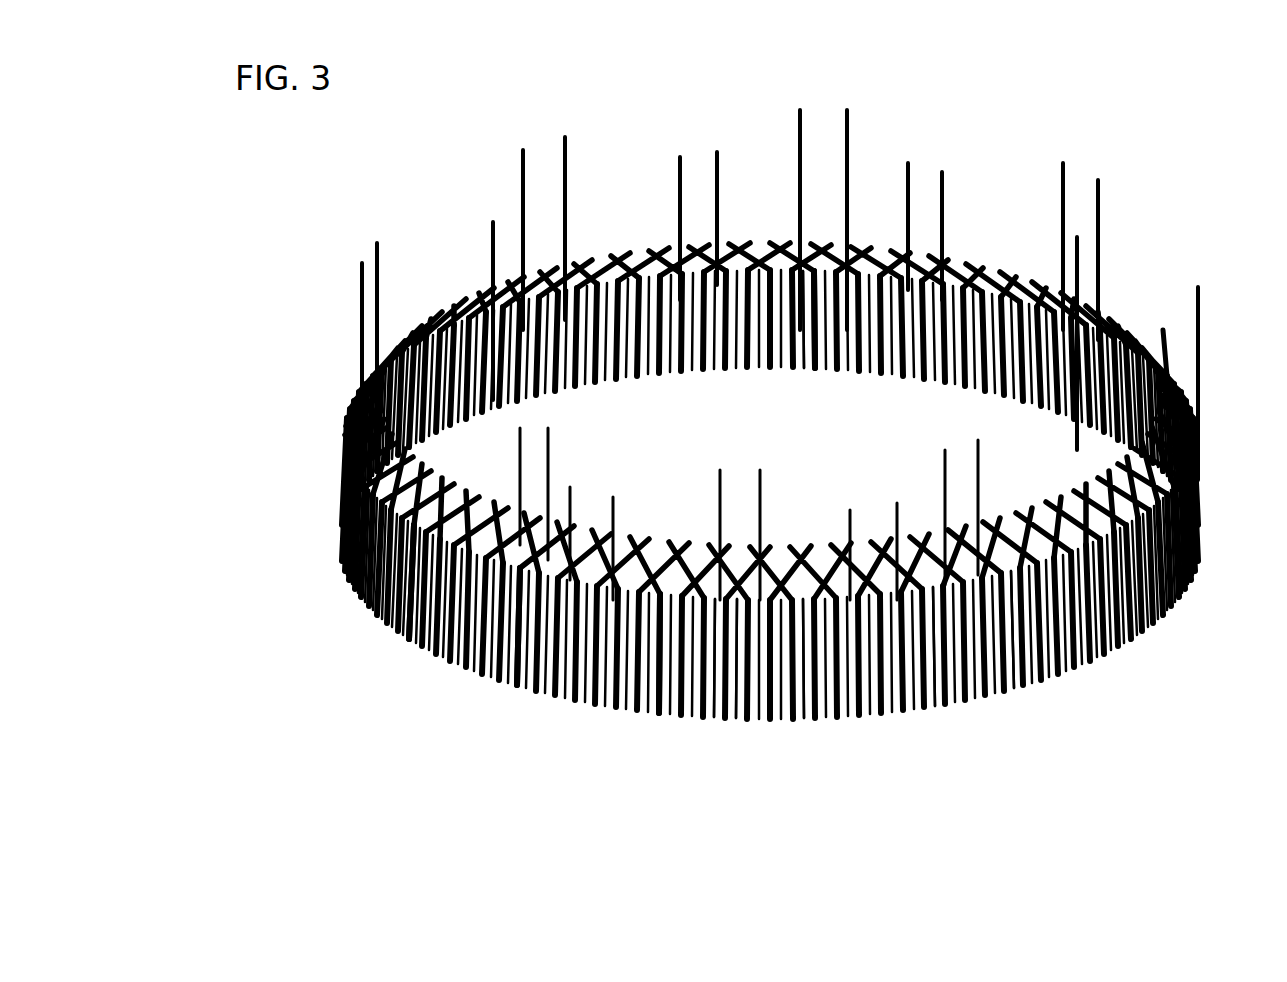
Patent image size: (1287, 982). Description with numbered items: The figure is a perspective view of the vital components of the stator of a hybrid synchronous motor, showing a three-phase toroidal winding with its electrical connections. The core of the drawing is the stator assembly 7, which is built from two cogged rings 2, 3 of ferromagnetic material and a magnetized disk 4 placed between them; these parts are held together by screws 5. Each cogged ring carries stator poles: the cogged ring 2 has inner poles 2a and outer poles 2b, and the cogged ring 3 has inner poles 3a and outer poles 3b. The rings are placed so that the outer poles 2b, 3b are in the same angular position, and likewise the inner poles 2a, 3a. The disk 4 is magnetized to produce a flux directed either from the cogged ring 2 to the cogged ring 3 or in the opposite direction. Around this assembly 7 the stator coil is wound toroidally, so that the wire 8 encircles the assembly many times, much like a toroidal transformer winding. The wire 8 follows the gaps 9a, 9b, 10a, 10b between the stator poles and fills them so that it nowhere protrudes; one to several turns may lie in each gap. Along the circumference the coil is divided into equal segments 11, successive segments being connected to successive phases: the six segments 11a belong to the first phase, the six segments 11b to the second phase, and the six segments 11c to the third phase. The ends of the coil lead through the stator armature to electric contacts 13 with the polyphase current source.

The cogged ring 2 is at (346, 531).
The inner pole 2a is at (813, 347).
The outer pole 2b is at (717, 720).
The cogged ring 3 is at (340, 460).
The inner pole 3a is at (812, 280).
The outer pole 3b is at (714, 648).
The magnetized disk 4 is at (1010, 700).
The screw 5 is at (1167, 350).
The stator assembly 7 is at (318, 492).
The wire 8 is at (362, 340).
The gap 9a is at (815, 350).
The gap 9b is at (730, 723).
The gap 10a is at (810, 305).
The gap 10b is at (758, 590).
The segment 11 is at (463, 777).
The first-phase segment 11a is at (660, 720).
The second-phase segment 11b is at (800, 722).
The third-phase segment 11c is at (938, 712).
The electric contact 13 is at (360, 270).